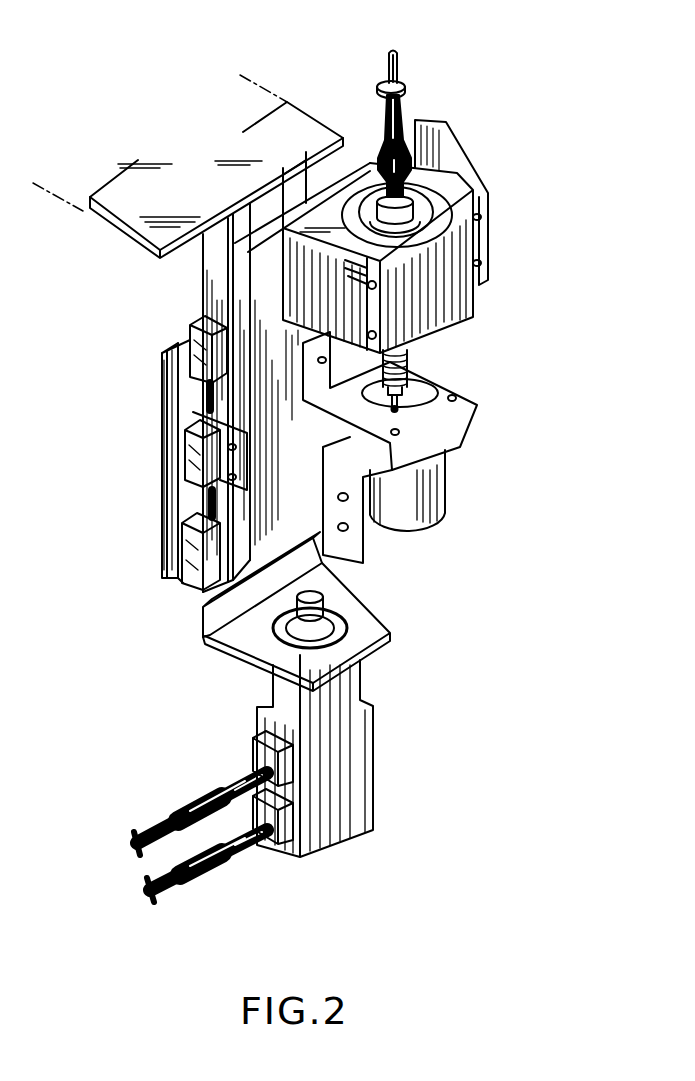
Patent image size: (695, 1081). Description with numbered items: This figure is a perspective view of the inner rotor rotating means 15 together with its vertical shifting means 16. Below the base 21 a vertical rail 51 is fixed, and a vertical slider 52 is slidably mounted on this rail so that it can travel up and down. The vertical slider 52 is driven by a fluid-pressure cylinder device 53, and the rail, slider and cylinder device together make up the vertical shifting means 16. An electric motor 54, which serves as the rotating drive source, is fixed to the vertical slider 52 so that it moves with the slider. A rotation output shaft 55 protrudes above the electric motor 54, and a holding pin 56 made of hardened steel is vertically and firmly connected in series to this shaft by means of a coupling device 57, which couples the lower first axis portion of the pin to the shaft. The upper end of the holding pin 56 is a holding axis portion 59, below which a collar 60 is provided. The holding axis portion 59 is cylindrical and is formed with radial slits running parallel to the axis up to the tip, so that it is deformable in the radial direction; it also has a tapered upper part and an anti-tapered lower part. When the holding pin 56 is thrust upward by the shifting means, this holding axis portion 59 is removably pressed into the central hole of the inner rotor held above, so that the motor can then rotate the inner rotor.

The inner rotor rotating means 15 is at (487, 370).
The vertical shifting means 16 is at (390, 812).
The base 21 is at (278, 133).
The vertical rail 51 is at (187, 337).
The vertical slider 52 is at (265, 267).
The fluid-pressure cylinder device 53 is at (353, 780).
The electric motor 54 is at (443, 513).
The rotation output shaft 55 is at (457, 447).
The holding pin 56 is at (418, 111).
The coupling device 57 is at (443, 213).
The holding axis portion 59 is at (395, 55).
The collar 60 is at (405, 82).